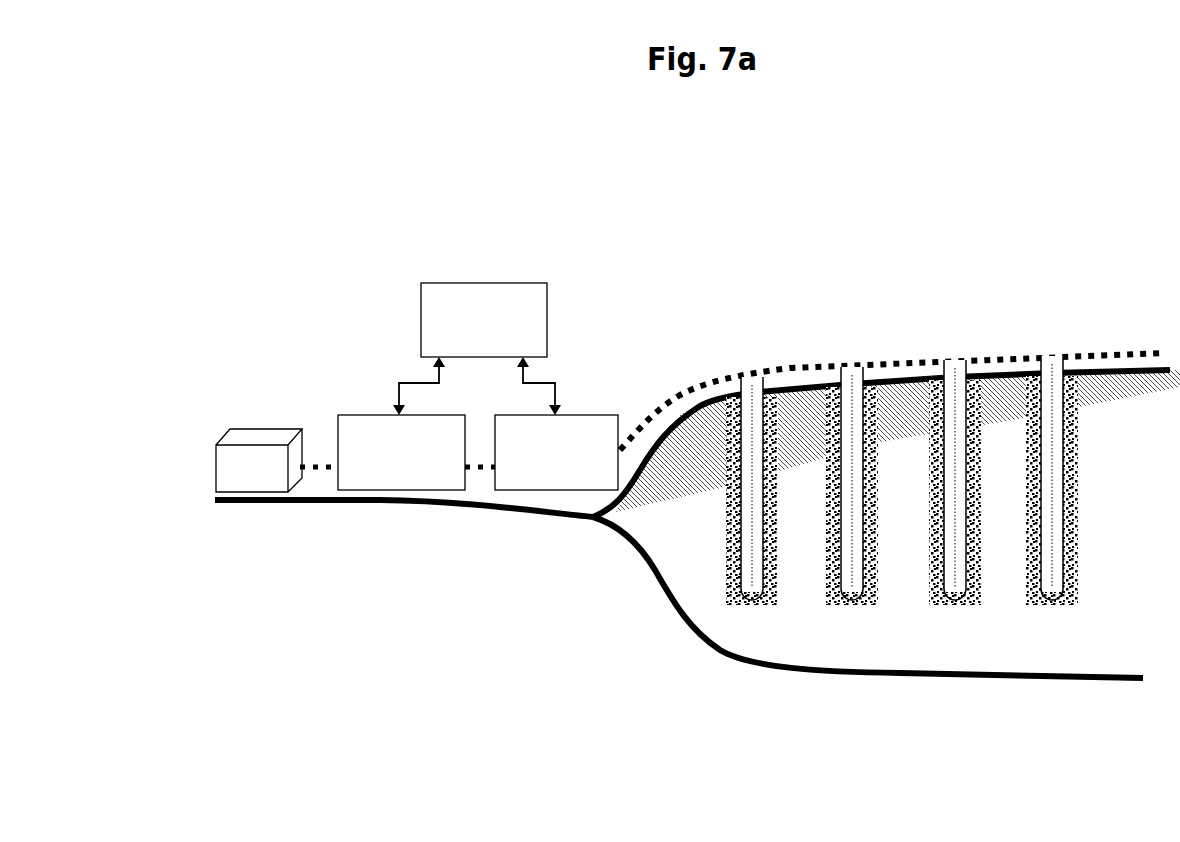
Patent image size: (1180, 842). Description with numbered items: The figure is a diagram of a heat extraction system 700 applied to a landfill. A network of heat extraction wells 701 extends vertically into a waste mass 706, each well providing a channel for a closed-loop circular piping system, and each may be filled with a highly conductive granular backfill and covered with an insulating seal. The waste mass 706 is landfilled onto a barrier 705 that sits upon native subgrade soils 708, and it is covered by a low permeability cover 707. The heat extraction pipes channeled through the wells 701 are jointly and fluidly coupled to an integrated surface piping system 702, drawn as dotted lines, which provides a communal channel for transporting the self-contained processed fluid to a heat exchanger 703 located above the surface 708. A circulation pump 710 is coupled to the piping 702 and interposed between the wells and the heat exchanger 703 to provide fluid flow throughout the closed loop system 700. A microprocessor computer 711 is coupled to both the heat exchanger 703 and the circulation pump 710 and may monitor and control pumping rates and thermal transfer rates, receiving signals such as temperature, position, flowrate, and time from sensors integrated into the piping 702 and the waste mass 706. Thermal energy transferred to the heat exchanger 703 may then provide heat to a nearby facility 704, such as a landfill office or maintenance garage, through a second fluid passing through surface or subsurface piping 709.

The system 700 is at (823, 197).
The heat extraction wells 701 is at (916, 523).
The surface piping system 702 is at (893, 363).
The heat exchanger 703 is at (369, 413).
The facility 704 is at (266, 427).
The barrier 705 is at (737, 660).
The waste mass 706 is at (1122, 506).
The low permeability cover 707 is at (1013, 370).
The native subgrade soils 708 is at (697, 502).
The surface or subsurface piping 709 is at (320, 470).
The circulation pump 710 is at (583, 413).
The microprocessor computer 711 is at (451, 282).